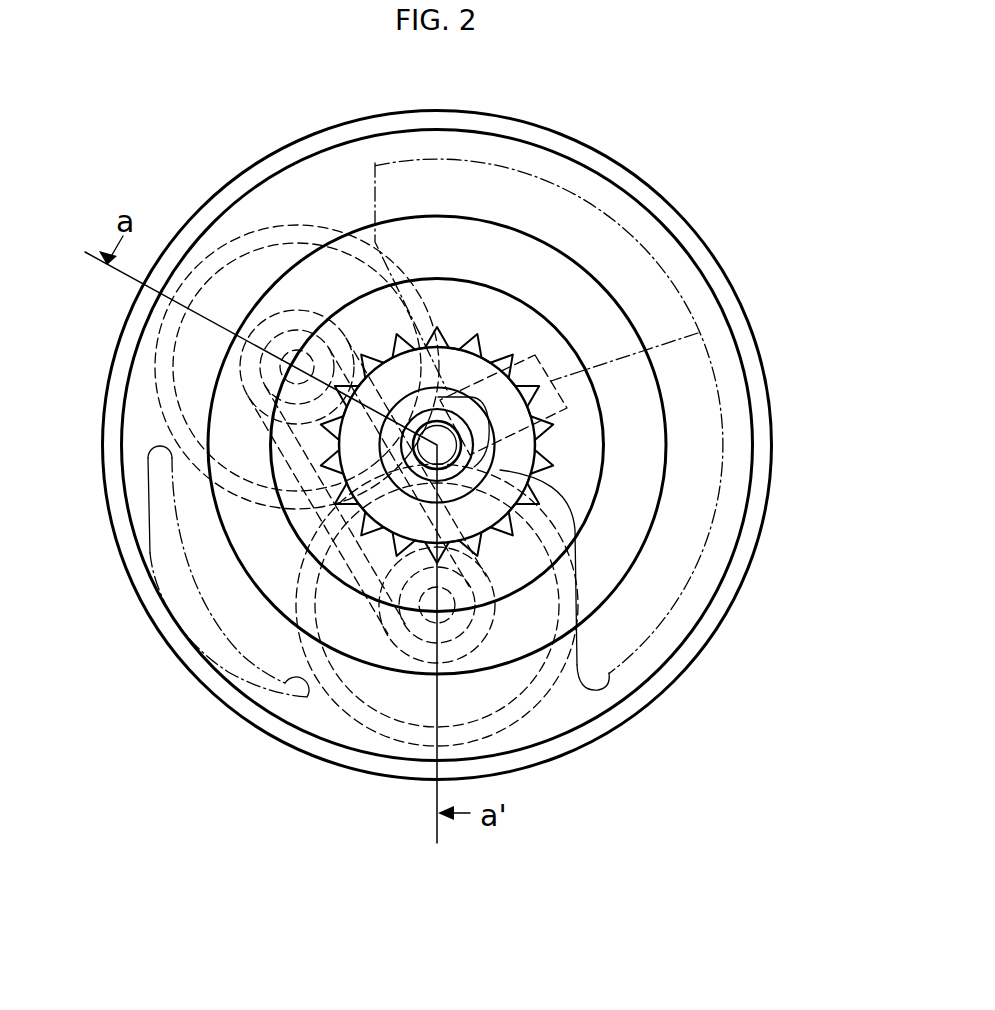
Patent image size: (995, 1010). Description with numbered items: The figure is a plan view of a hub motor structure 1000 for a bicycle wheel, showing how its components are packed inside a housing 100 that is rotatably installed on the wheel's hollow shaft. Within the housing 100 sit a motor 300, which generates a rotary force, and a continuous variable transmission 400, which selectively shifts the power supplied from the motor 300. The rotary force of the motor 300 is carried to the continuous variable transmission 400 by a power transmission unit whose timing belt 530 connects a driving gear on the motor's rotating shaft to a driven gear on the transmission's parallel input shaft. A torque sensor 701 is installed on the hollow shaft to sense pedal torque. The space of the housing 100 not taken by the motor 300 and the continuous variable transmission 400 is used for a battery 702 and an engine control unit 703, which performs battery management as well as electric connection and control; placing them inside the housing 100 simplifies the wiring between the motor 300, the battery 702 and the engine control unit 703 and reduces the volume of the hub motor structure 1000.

The housing 100 is at (305, 140).
The hub motor structure 1000 is at (734, 212).
The motor 300 is at (154, 386).
The continuous variable transmission 400 is at (543, 693).
The timing belt 530 is at (400, 618).
The torque sensor 701 is at (551, 380).
The battery 702 is at (150, 553).
The engine control unit 703 is at (676, 282).